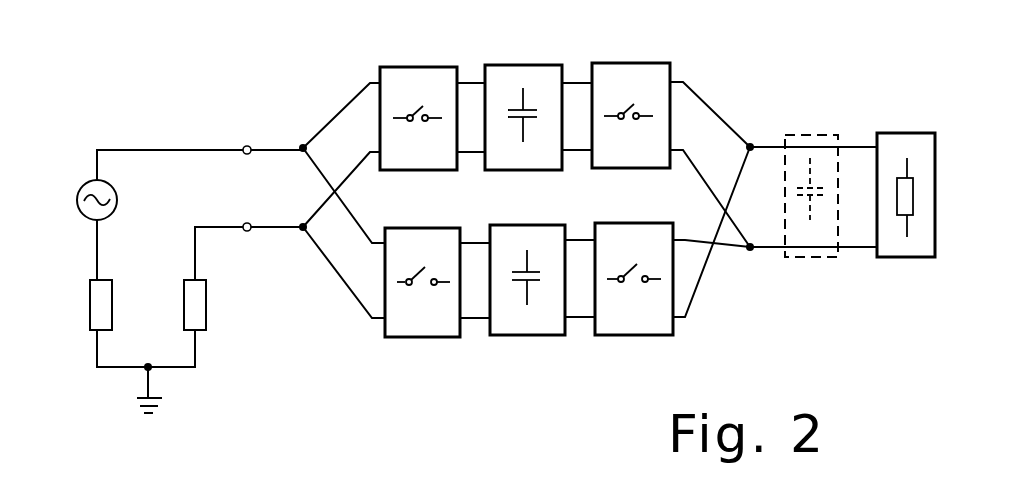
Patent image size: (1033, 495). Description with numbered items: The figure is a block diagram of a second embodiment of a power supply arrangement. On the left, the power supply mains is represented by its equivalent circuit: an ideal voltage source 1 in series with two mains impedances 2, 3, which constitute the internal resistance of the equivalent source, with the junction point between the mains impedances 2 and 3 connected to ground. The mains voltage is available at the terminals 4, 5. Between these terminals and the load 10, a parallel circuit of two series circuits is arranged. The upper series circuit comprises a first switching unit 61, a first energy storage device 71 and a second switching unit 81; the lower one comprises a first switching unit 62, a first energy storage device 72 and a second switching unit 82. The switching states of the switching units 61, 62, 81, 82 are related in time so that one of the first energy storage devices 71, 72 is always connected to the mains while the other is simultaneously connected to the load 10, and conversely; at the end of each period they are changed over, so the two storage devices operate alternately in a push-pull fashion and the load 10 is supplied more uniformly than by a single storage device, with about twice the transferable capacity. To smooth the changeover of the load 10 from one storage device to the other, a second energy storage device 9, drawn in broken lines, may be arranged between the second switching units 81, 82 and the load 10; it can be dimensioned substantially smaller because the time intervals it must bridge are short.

The voltage source 1 is at (77, 208).
The mains impedance 2 is at (90, 304).
The mains impedance 3 is at (206, 300).
The terminal 4 is at (247, 145).
The terminal 5 is at (247, 222).
The first switching unit 61 is at (433, 65).
The first switching unit 62 is at (437, 337).
The first energy storage device 71 is at (535, 65).
The first energy storage device 72 is at (548, 337).
The second switching unit 81 is at (647, 63).
The second switching unit 82 is at (655, 335).
The second energy storage device 9 is at (815, 257).
The load 10 is at (920, 257).